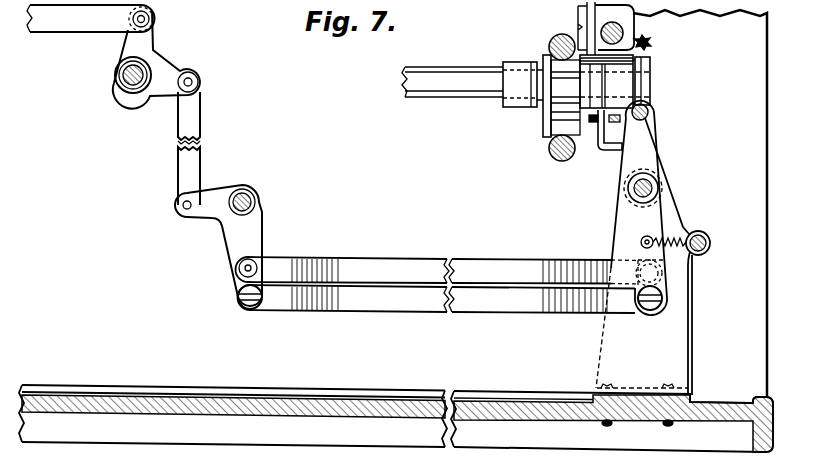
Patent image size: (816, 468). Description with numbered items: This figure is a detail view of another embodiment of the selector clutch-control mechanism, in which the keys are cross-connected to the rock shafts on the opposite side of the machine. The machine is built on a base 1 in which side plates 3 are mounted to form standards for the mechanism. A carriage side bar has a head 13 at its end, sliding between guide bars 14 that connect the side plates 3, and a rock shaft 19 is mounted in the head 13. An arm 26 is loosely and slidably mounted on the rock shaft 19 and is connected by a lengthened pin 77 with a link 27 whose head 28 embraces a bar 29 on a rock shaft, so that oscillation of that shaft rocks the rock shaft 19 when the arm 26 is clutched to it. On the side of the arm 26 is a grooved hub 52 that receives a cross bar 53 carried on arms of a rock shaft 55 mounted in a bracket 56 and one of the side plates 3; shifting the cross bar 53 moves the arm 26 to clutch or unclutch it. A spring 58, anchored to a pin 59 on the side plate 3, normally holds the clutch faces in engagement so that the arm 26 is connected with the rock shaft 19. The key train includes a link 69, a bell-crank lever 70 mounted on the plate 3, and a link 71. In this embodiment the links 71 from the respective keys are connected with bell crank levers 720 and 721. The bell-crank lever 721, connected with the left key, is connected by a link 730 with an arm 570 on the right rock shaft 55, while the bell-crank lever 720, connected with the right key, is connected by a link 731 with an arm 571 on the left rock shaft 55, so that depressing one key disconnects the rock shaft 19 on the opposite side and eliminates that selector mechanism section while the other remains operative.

The base 1 is at (266, 401).
The side plate 3 is at (763, 92).
The head 13 is at (548, 58).
The guide bar 14 is at (560, 34).
The rock shaft 19 is at (448, 84).
The arm 26 is at (607, 88).
The link 27 is at (604, 151).
The head 28 is at (636, 21).
The bar 29 is at (653, 45).
The hub 52 is at (651, 87).
The cross bar 53 is at (650, 113).
The rock shaft 55 is at (658, 184).
The bracket 56 is at (604, 353).
The spring 58 is at (676, 240).
The pin 59 is at (711, 243).
The link 69 is at (86, 27).
The bell-crank lever 70 is at (149, 40).
The link 71 is at (199, 116).
The pin 77 is at (618, 126).
The arm 570 is at (640, 262).
The arm 571 is at (662, 290).
The bell crank lever 720 is at (258, 226).
The bell crank lever 721 is at (240, 288).
The link 730 is at (403, 262).
The link 731 is at (400, 308).